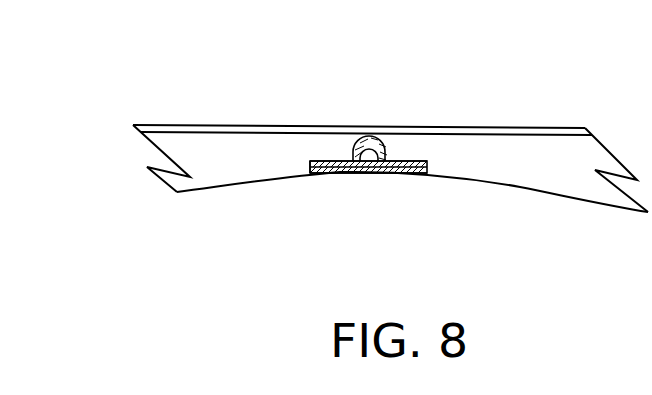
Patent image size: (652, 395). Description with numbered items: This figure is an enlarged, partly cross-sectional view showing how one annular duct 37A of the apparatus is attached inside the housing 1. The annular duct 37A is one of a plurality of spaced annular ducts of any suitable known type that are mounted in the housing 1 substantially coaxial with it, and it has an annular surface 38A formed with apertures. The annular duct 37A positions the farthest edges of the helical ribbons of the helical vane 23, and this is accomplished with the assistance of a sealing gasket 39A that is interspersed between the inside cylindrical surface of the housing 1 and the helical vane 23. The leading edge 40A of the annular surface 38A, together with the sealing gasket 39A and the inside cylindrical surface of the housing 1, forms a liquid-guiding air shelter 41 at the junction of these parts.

The housing 1 is at (545, 127).
The helical vane 23 is at (587, 203).
The annular duct 37A is at (395, 173).
The annular surface 38A is at (330, 173).
The sealing gasket 39A is at (380, 138).
The leading edge 40A is at (312, 160).
The liquid-guiding air shelter 41 is at (325, 147).